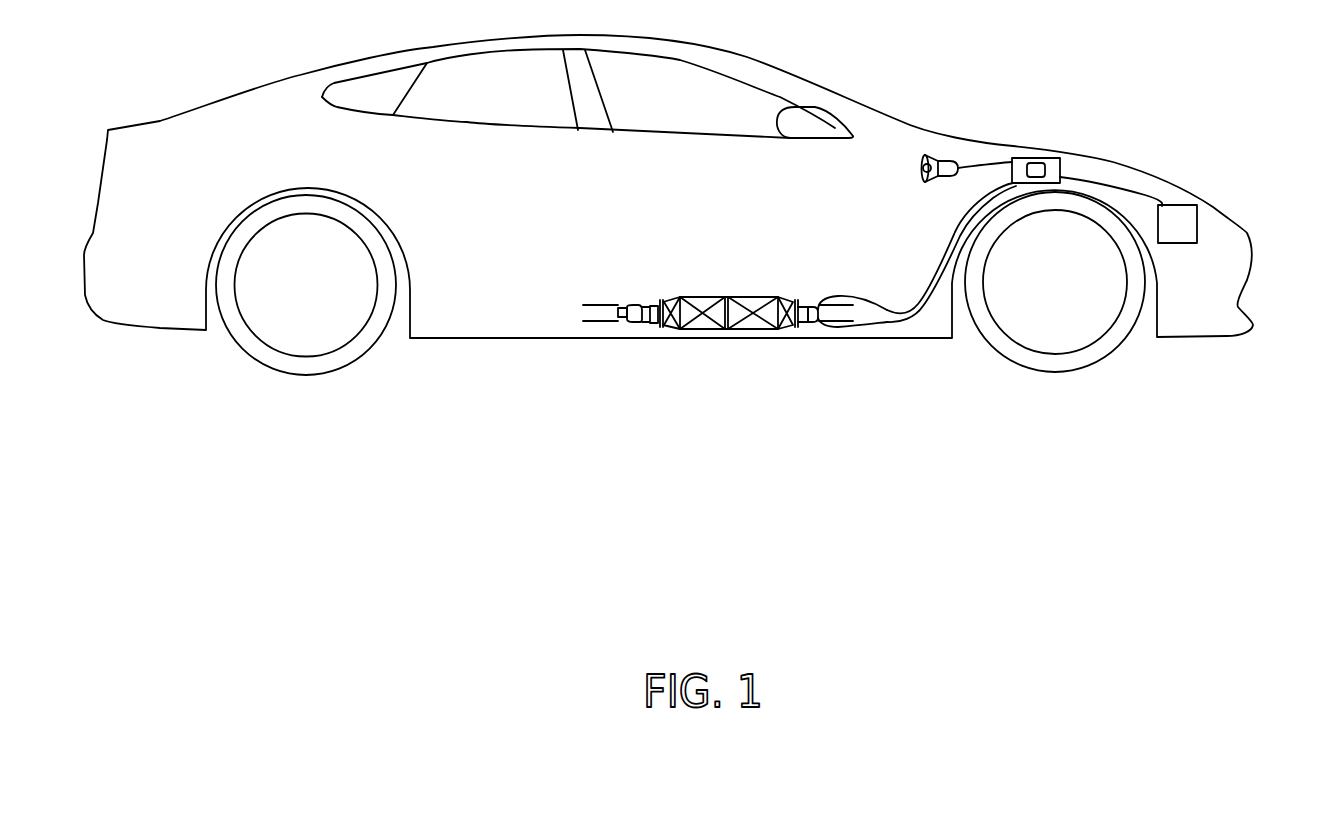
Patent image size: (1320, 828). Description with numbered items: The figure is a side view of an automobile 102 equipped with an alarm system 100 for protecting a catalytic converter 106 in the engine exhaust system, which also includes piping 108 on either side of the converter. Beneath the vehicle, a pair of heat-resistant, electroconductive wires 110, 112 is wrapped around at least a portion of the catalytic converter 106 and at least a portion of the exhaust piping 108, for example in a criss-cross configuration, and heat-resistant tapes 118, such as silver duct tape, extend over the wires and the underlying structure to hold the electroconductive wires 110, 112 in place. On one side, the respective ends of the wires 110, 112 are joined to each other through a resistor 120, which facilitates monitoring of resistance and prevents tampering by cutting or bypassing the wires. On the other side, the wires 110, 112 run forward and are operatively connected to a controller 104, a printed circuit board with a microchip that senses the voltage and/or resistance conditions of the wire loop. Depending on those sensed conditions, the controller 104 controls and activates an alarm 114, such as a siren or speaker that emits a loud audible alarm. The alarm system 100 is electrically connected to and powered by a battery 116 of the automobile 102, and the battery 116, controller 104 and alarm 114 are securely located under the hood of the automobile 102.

The alarm system 100 is at (668, 224).
The automobile 102 is at (471, 188).
The controller 104 is at (1067, 167).
The catalytic converter 106 is at (712, 296).
The piping 108 is at (832, 323).
The heat-resistant, electroconductive wire 110 is at (878, 305).
The heat-resistant, electroconductive wire 112 is at (888, 323).
The alarm 114 is at (947, 152).
The battery 116 is at (1173, 243).
The heat-resistant tape 118 is at (727, 330).
The resistor 120 is at (618, 315).